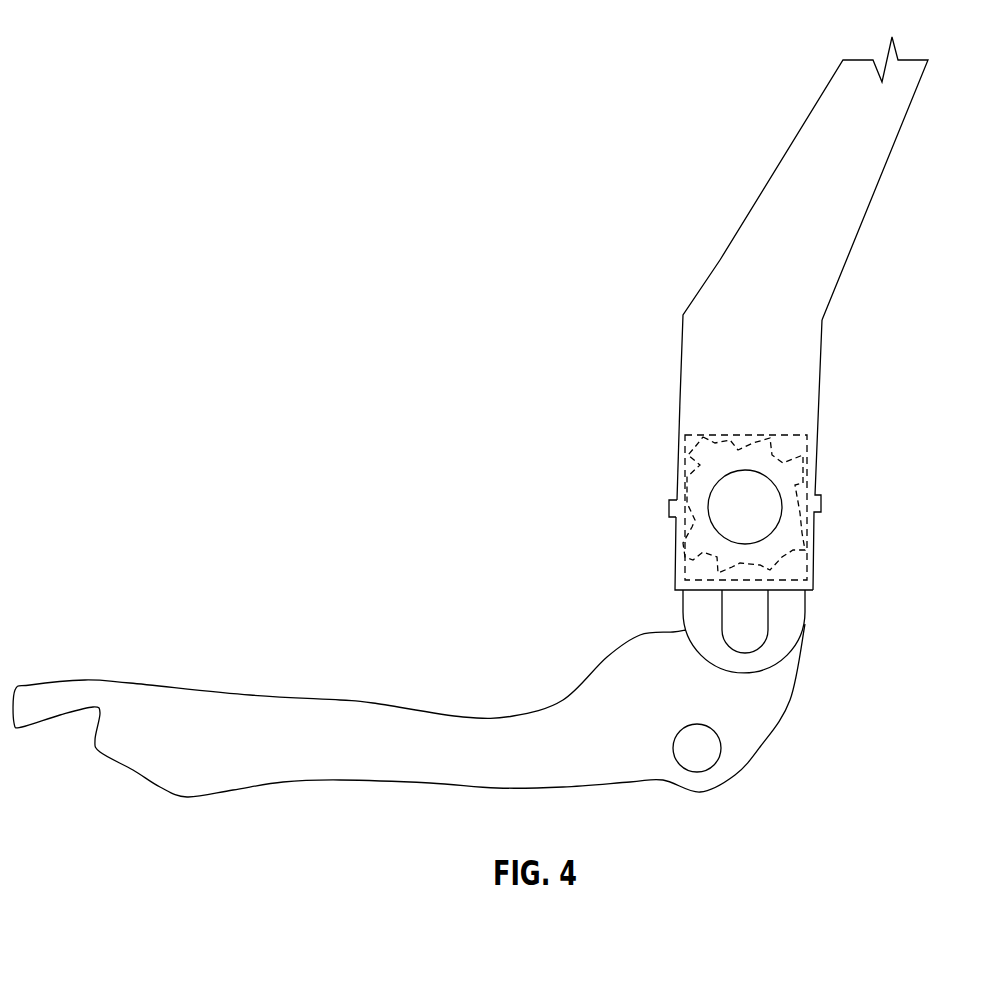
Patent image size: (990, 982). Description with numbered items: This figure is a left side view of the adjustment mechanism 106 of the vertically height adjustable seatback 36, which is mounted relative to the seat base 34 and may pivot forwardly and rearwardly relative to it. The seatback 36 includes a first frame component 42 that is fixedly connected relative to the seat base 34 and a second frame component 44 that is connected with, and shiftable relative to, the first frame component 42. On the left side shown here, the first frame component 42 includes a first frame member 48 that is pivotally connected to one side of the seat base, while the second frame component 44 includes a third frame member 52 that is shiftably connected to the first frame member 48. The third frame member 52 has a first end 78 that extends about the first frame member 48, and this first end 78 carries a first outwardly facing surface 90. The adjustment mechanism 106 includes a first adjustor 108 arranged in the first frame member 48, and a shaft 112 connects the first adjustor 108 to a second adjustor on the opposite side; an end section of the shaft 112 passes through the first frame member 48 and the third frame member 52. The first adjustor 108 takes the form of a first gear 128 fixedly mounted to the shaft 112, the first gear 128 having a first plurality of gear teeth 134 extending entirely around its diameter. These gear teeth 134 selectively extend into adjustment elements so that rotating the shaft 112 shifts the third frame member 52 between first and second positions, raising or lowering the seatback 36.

The seat base 34 is at (266, 606).
The seatback 36 is at (777, 340).
The first frame component 42 is at (735, 646).
The second frame component 44 is at (814, 268).
The first frame member 48 is at (700, 622).
The third frame member 52 is at (700, 288).
The first end 78 is at (772, 455).
The first outwardly facing surface 90 is at (675, 578).
The adjustment mechanism 106 is at (780, 505).
The first adjustor 108 is at (742, 574).
The shaft 112 is at (745, 507).
The first gear 128 is at (805, 448).
The first plurality of gear teeth 134 is at (672, 508).